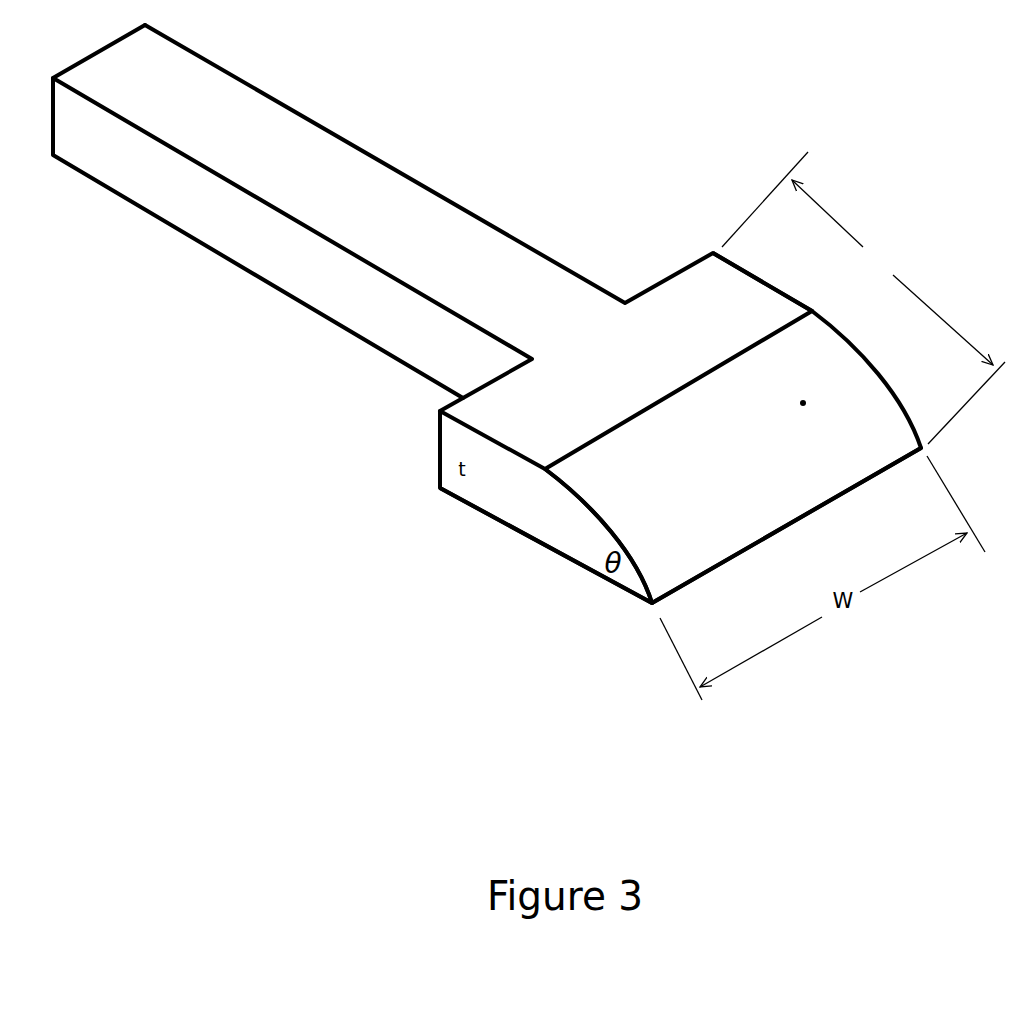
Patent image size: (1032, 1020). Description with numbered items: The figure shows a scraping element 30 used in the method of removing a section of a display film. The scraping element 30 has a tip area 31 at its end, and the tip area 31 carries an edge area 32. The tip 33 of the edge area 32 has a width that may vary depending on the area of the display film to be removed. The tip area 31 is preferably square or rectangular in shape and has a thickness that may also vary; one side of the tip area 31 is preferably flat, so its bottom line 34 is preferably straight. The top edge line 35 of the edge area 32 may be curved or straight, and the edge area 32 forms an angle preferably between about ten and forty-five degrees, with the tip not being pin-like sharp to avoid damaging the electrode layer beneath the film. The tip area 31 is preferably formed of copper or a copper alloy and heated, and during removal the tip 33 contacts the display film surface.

The scraping element 30 is at (260, 322).
The tip area 31 is at (863, 298).
The edge area 32 is at (803, 403).
The tip 33 is at (842, 497).
The bottom line 34 is at (512, 529).
The top edge line 35 is at (587, 505).